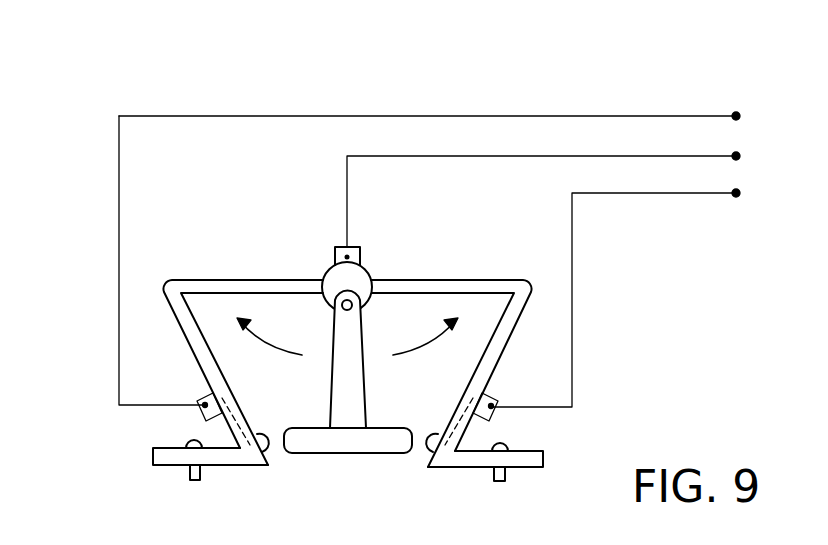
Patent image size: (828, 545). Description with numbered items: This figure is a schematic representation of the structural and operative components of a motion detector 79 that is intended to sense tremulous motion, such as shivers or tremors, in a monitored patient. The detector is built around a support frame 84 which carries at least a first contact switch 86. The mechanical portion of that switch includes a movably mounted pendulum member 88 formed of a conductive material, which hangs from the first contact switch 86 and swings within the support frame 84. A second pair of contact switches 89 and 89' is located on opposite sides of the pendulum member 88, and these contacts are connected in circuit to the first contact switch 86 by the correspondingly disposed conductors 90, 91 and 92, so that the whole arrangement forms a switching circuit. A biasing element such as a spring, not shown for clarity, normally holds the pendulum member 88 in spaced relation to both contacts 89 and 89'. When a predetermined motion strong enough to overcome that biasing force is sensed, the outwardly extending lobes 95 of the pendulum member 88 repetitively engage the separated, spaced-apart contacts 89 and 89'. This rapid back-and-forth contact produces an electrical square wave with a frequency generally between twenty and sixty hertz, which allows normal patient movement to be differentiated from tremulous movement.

The motion detector 79 is at (254, 98).
The support frame 84 is at (442, 280).
The first contact switch 86 is at (330, 270).
The pendulum member 88 is at (367, 335).
The contact switch 89 is at (277, 415).
The contact switch 89' is at (418, 415).
The conductor 90 is at (119, 247).
The conductor 91 is at (347, 187).
The conductor 92 is at (572, 270).
The outwardly extending lobes 95 is at (287, 453).